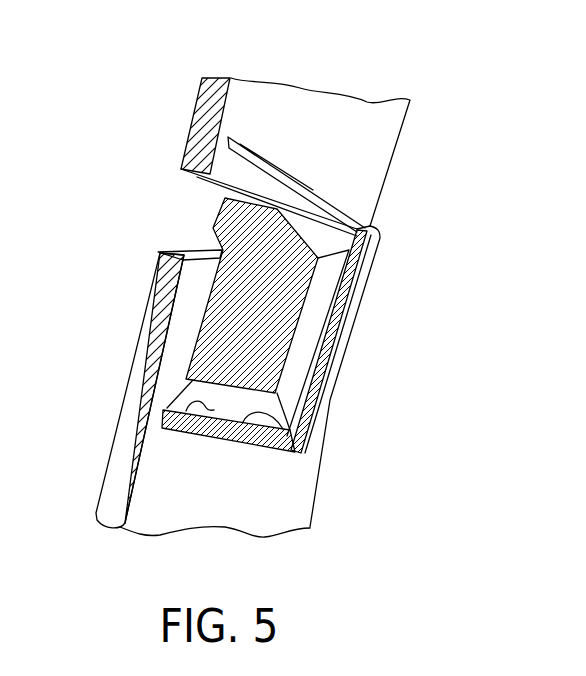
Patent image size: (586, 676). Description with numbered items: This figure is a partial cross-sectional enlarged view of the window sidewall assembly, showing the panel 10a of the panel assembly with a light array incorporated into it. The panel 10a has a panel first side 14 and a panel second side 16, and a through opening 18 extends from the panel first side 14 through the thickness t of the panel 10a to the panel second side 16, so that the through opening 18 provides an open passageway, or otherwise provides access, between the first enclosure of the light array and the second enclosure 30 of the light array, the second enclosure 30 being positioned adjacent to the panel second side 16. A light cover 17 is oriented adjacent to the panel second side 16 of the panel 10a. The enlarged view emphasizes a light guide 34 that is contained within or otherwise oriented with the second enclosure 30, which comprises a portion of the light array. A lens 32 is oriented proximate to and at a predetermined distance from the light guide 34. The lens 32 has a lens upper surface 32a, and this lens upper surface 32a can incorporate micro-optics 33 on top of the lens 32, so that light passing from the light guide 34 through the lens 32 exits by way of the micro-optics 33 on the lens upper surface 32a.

The panel 10a is at (218, 78).
The thickness t is at (234, 92).
The through opening 18 is at (186, 213).
The panel second side 16 is at (375, 152).
The panel first side 14 is at (142, 322).
The light guide 34 is at (218, 358).
The light cover 17 is at (357, 272).
The second enclosure 30 is at (310, 317).
The lens 32 is at (259, 448).
The lens upper surface 32a is at (293, 430).
The micro-optics 33 is at (190, 423).